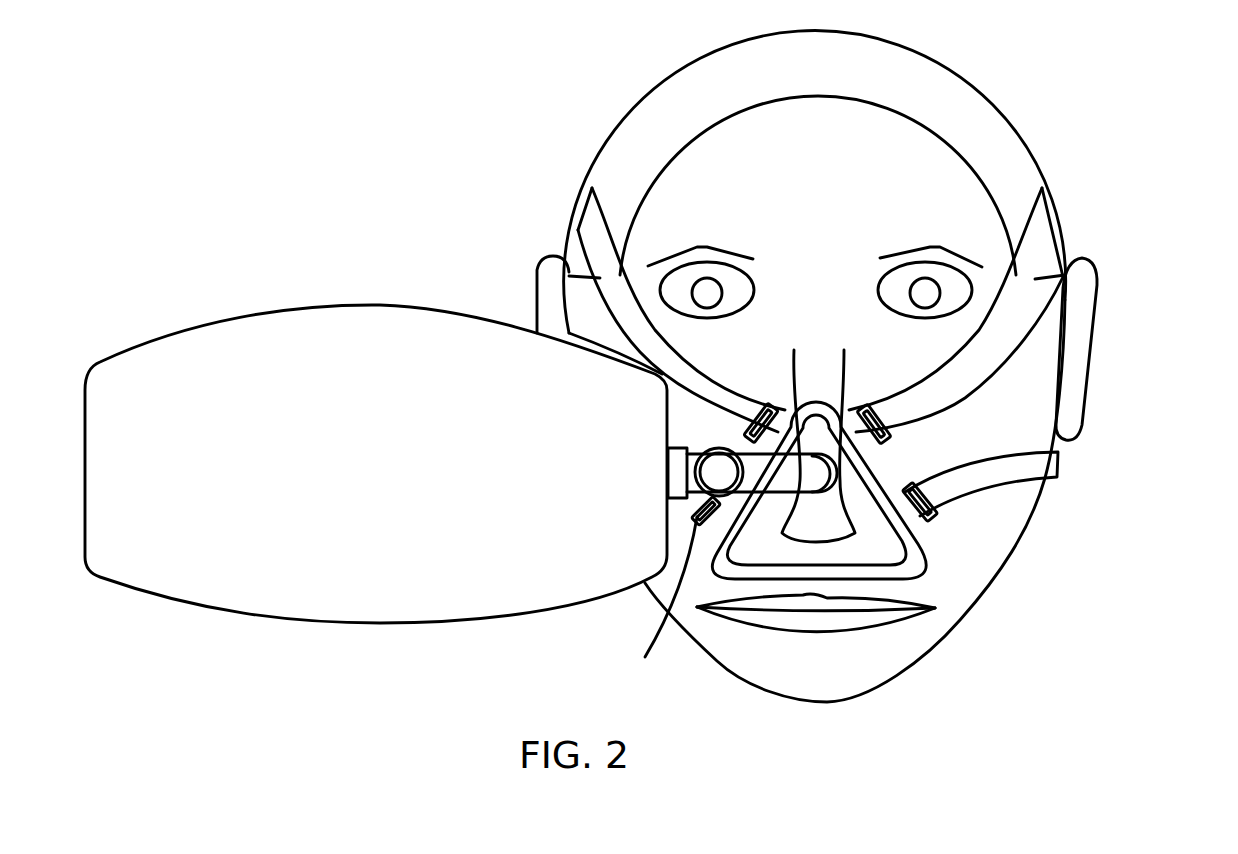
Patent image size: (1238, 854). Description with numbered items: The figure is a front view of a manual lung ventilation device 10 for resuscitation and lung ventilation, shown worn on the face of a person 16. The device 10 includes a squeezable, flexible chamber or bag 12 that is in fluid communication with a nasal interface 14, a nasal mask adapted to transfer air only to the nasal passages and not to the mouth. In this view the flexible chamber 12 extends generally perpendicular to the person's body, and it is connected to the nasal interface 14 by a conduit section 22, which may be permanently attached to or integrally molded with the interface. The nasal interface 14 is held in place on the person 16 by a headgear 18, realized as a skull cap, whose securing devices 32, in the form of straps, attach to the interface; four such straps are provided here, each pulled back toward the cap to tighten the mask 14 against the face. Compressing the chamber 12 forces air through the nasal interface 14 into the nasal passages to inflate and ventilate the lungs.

The ventilation device 10 is at (317, 118).
The flexible chamber 12 is at (302, 338).
The nasal interface 14 is at (877, 546).
The person 16 is at (1017, 372).
The headgear 18 is at (960, 105).
The conduit section 22 is at (773, 477).
The securing device 32 is at (592, 220).